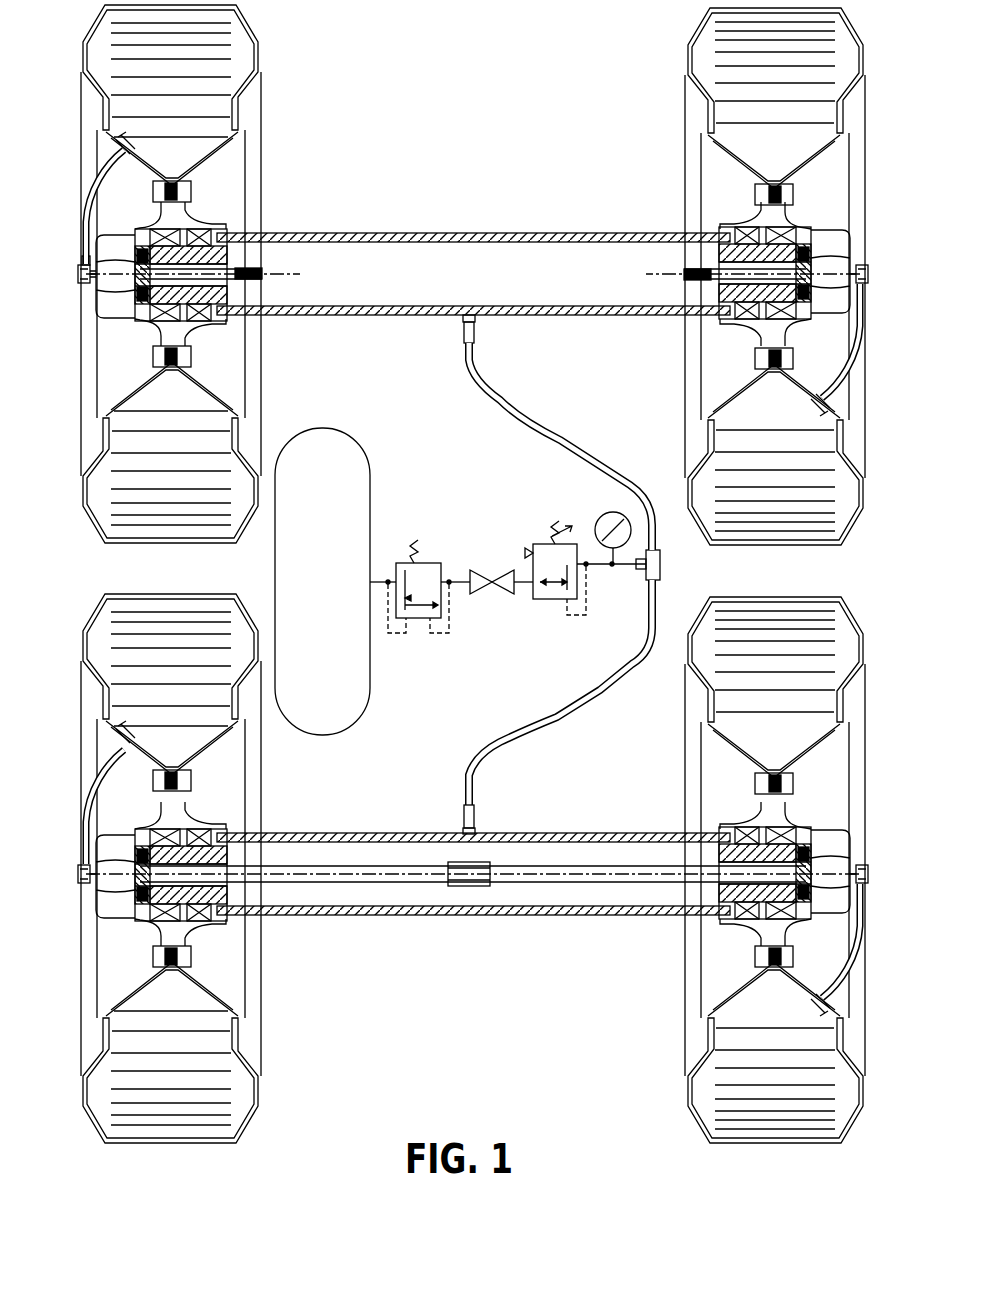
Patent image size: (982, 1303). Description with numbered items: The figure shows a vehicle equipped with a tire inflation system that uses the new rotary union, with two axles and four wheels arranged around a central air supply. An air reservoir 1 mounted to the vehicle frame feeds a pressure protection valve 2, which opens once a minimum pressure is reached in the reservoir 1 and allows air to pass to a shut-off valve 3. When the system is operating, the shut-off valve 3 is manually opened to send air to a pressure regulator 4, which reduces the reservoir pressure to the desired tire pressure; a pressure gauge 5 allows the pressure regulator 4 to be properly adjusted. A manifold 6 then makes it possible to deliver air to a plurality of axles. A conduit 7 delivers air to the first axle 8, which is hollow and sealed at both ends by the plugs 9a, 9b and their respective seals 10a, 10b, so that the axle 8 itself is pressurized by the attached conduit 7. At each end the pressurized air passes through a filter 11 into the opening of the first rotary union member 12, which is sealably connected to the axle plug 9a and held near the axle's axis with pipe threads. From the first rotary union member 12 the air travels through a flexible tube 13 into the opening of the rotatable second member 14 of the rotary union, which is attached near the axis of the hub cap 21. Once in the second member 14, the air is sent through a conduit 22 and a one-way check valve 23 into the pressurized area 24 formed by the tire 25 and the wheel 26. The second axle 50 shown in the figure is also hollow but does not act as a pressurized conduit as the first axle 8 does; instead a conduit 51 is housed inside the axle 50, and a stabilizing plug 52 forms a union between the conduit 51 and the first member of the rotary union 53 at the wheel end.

The air reservoir 1 is at (330, 430).
The pressure protection valve 2 is at (404, 563).
The shut-off valve 3 is at (484, 576).
The pressure regulator 4 is at (540, 544).
The pressure gauge 5 is at (610, 512).
The manifold 6 is at (660, 565).
The conduit 7 is at (530, 432).
The axle 8 is at (418, 233).
The axle plug 9a is at (145, 318).
The axle plug 9b is at (812, 272).
The seal 10a is at (142, 302).
The seal 10b is at (800, 262).
The filter 11 is at (266, 252).
The first rotary union member 12 is at (100, 314).
The flexible tube 13 is at (85, 256).
The second member 14 is at (78, 269).
The hub cap 21 is at (93, 279).
The conduit 22 is at (88, 202).
The one-way check valve 23 is at (120, 144).
The pressurized area 24 is at (240, 50).
The tire 25 is at (260, 40).
The wheel 26 is at (205, 138).
The second axle 50 is at (596, 833).
The conduit 51 is at (386, 864).
The stabilizing plug 52 is at (82, 847).
The rotary union 53 is at (84, 885).